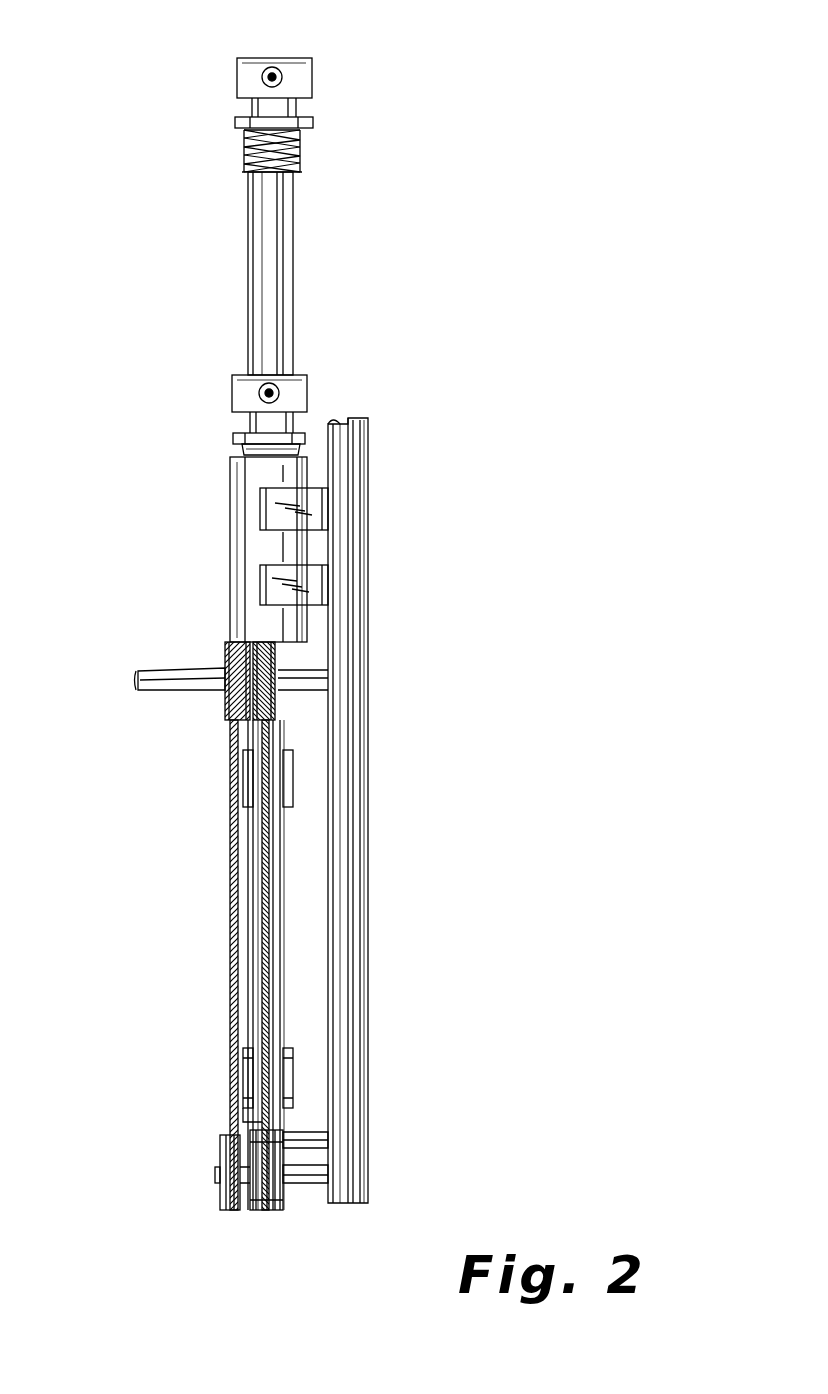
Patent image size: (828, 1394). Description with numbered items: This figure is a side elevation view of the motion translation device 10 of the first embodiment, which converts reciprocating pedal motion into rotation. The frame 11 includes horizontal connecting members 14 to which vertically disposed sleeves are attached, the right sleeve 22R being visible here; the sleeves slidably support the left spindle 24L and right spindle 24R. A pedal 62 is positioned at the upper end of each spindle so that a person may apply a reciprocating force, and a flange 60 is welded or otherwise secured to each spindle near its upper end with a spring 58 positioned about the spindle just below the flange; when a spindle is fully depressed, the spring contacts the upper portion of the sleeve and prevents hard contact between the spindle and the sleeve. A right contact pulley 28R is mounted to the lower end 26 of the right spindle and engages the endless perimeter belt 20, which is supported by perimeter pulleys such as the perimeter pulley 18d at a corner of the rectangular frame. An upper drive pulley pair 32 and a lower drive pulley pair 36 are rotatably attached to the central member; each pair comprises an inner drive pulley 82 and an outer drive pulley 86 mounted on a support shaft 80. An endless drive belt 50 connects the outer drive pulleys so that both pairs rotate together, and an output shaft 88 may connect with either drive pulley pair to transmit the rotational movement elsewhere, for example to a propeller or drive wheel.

The motion translation device 10 is at (462, 226).
The frame 11 is at (365, 440).
The horizontal connecting members 14 is at (313, 503).
The perimeter pulley 18d is at (253, 1126).
The endless perimeter belt 20 is at (263, 957).
The right sleeve 22R is at (240, 528).
The left spindle 24L is at (278, 228).
The right spindle 24R is at (255, 425).
The lower end 26 is at (287, 1085).
The right contact pulley 28R is at (246, 1066).
The upper drive pulley pair 32 is at (208, 636).
The lower drive pulley pair 36 is at (175, 1209).
The endless drive belt 50 is at (232, 873).
The spring 58 is at (246, 162).
The flange 60 is at (238, 122).
The pedal 62 is at (240, 70).
The support shaft 80 is at (306, 1180).
The inner drive pulley 82 is at (277, 1195).
The outer drive pulley 86 is at (220, 1153).
The output shaft 88 is at (148, 678).